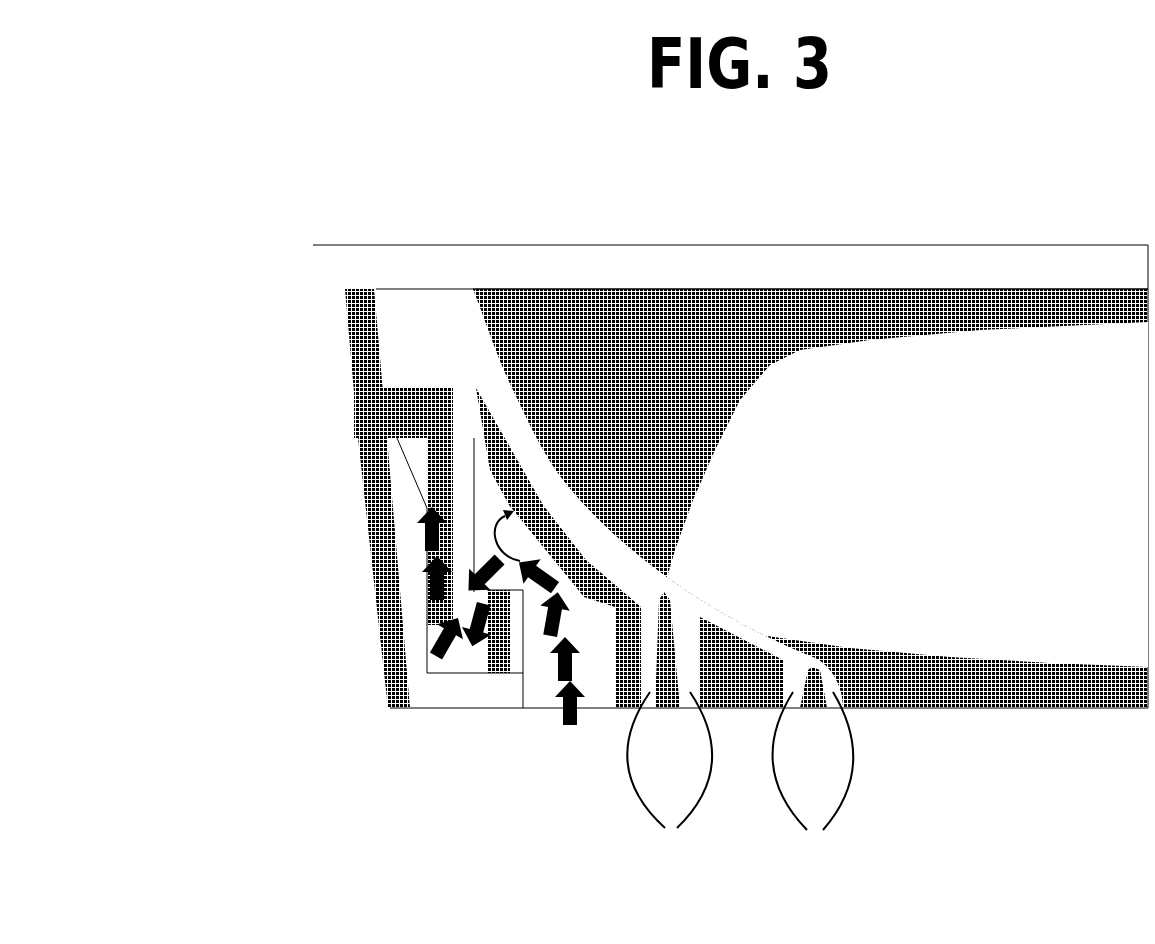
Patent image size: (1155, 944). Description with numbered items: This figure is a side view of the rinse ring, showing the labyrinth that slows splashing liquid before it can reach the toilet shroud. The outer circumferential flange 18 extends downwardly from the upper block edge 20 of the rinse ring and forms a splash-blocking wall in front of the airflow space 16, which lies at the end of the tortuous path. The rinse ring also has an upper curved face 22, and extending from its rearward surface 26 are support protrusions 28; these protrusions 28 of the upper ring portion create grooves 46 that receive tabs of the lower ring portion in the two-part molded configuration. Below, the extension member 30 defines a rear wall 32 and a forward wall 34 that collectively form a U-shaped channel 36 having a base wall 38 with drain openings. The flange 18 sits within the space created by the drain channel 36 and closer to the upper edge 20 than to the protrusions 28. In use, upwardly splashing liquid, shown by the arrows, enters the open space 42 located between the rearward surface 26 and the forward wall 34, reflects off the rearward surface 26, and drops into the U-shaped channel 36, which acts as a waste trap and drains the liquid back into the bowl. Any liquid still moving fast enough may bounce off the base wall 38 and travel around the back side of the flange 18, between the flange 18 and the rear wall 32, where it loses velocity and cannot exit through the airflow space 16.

The airflow space 16 is at (383, 402).
The outer circumferential flange 18 is at (463, 438).
The upper block edge 20 is at (385, 387).
The upper curved face 22 is at (565, 492).
The rearward surface 26 is at (503, 560).
The support protrusions 28 is at (740, 780).
The extension member 30 is at (392, 578).
The rear wall 32 is at (425, 658).
The forward wall 34 is at (517, 650).
The U-shaped channel 36 is at (453, 660).
The base wall 38 is at (481, 707).
The open space 42 is at (593, 695).
The grooves 46 is at (672, 643).